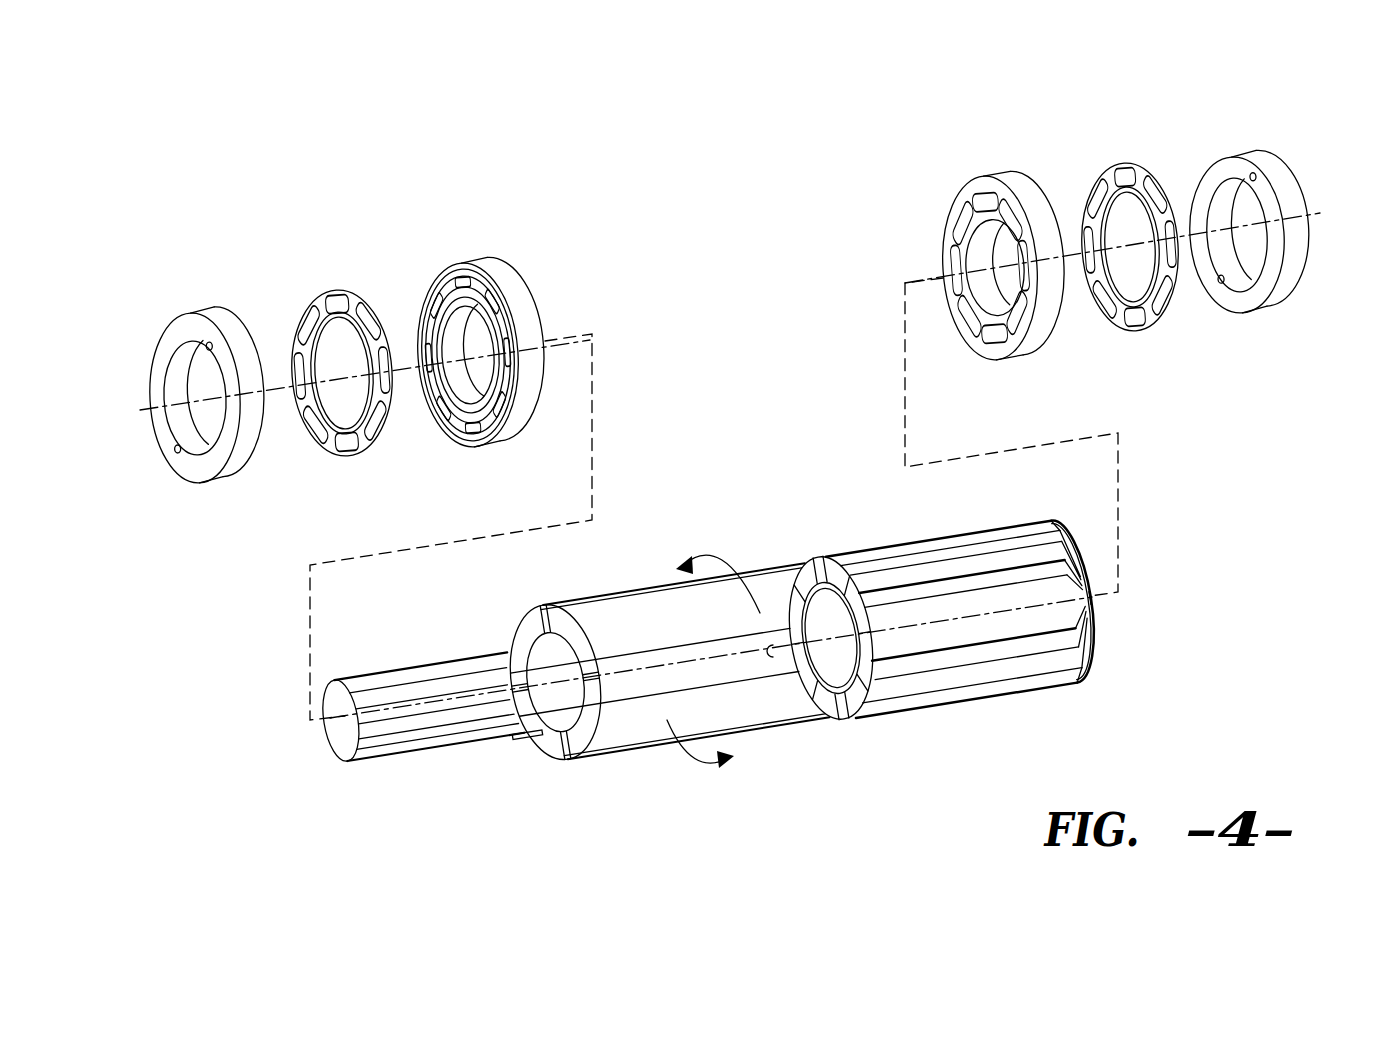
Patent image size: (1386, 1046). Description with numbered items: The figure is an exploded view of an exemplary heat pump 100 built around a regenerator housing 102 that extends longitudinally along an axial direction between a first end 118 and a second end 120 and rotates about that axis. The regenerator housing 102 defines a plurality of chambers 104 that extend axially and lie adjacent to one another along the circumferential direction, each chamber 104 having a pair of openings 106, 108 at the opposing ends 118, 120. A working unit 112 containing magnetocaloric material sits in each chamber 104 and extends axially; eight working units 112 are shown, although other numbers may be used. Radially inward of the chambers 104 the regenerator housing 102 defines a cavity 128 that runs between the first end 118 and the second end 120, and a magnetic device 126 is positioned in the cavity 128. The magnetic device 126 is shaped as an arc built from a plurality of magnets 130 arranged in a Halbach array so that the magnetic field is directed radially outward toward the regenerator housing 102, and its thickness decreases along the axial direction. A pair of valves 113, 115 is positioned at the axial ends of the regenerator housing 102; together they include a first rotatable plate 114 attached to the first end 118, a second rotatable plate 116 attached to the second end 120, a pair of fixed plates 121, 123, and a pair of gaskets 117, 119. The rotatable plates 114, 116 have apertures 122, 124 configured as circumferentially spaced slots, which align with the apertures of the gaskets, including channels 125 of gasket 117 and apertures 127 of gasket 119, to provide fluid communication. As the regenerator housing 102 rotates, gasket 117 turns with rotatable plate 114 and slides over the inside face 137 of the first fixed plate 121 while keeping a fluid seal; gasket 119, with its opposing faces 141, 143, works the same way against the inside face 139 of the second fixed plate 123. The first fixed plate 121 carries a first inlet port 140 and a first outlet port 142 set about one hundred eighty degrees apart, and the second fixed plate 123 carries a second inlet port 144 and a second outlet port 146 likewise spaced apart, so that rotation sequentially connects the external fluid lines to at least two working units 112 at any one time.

The heat pump 100 is at (258, 183).
The regenerator housing 102 is at (917, 641).
The chambers 104 is at (925, 572).
The opening 106 is at (811, 573).
The opening 108 is at (1070, 538).
The working units 112 is at (640, 600).
The valve 113 is at (362, 232).
The first rotatable plate 114 is at (482, 359).
The valve 115 is at (1210, 120).
The second rotatable plate 116 is at (1003, 269).
The gasket 117 is at (340, 455).
The first end 118 is at (843, 640).
The gasket 119 is at (1136, 260).
The second end 120 is at (1064, 690).
The first fixed plate 121 is at (187, 395).
The apertures 122 is at (462, 437).
The second fixed plate 123 is at (1258, 237).
The apertures 124 is at (982, 202).
The channels 125 is at (320, 306).
The magnetic device 126 is at (431, 714).
The apertures 127 is at (1120, 172).
The cavity 128 is at (830, 735).
The magnets 130 is at (445, 690).
The inside face 137 is at (237, 322).
The inside face 139 is at (1240, 302).
The first inlet port 140 is at (174, 449).
The face 141 is at (1150, 170).
The first outlet port 142 is at (210, 345).
The face 143 is at (1105, 322).
The second inlet port 144 is at (1259, 175).
The second outlet port 146 is at (1218, 283).